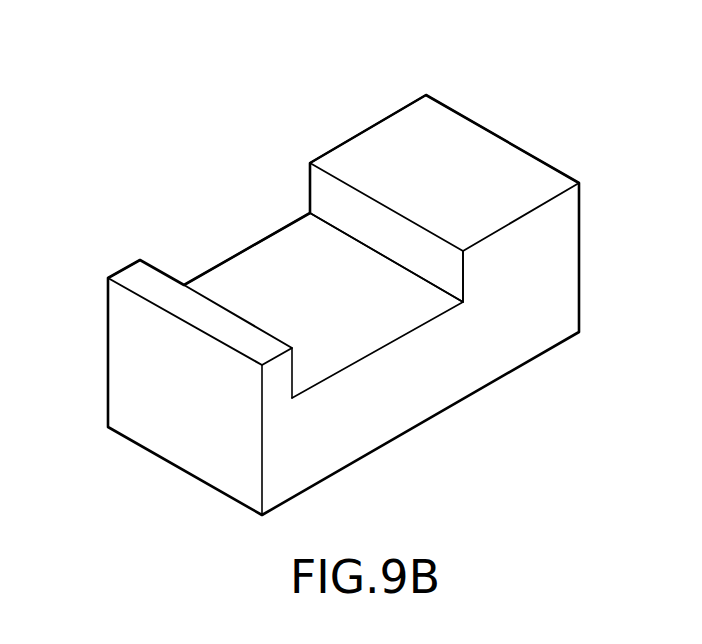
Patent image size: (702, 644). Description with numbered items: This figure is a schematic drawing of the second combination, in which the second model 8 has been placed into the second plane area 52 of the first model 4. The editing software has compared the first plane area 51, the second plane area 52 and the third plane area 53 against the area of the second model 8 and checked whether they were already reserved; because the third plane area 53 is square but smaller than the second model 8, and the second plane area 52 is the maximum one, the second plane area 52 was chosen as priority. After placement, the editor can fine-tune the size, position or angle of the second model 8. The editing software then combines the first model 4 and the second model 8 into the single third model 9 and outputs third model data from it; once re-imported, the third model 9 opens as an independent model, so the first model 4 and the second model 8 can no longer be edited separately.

The third model 9 is at (220, 53).
The first model 4 is at (528, 147).
The second model 8 is at (297, 283).
The first plane area 51 is at (220, 282).
The second plane area 52 is at (137, 282).
The third plane area 53 is at (436, 142).